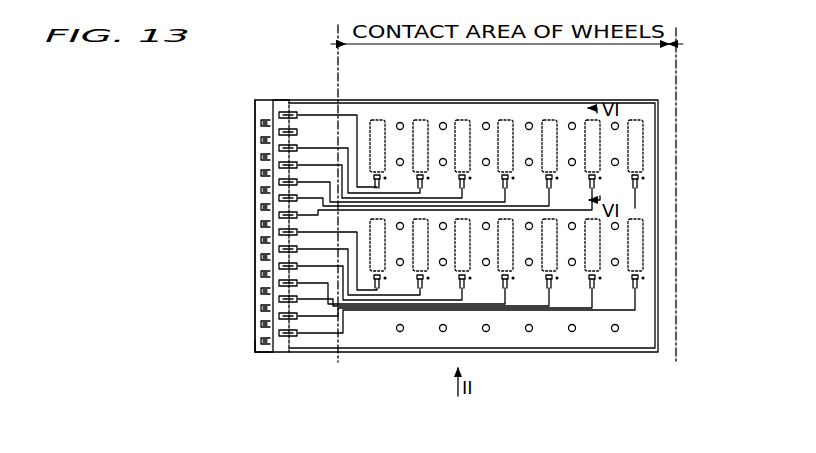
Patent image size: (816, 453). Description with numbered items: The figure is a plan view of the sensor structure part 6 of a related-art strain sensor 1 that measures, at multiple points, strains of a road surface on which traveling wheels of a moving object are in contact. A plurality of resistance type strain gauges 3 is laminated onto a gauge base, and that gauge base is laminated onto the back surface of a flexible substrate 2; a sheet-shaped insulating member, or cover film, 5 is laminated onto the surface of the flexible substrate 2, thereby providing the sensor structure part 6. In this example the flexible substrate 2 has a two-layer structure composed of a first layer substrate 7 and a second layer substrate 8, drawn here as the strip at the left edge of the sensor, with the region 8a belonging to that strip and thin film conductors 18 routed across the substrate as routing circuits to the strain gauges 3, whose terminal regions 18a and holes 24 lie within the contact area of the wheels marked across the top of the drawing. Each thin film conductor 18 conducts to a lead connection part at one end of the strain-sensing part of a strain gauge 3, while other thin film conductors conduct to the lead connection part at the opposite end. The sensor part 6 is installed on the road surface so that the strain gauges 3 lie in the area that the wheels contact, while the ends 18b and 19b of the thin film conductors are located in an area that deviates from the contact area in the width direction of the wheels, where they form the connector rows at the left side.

The strain sensor 1 is at (455, 237).
The flexible substrate 2 is at (245, 251).
The resistance type strain gauge 3 is at (395, 114).
The sheet-shaped insulating member (cover film) 5 is at (273, 102).
The sensor structure part 6 is at (378, 353).
The first layer substrate 7 is at (280, 354).
The second layer substrate 8 is at (262, 354).
The housing wall 8a is at (258, 340).
The thin film conductor (routing circuit) 18 is at (350, 102).
The wire end terminal 18a is at (378, 187).
The end of thin film conductor 18b is at (277, 113).
The end of thin film conductor 19b is at (261, 123).
The bolt hole 24 is at (444, 159).